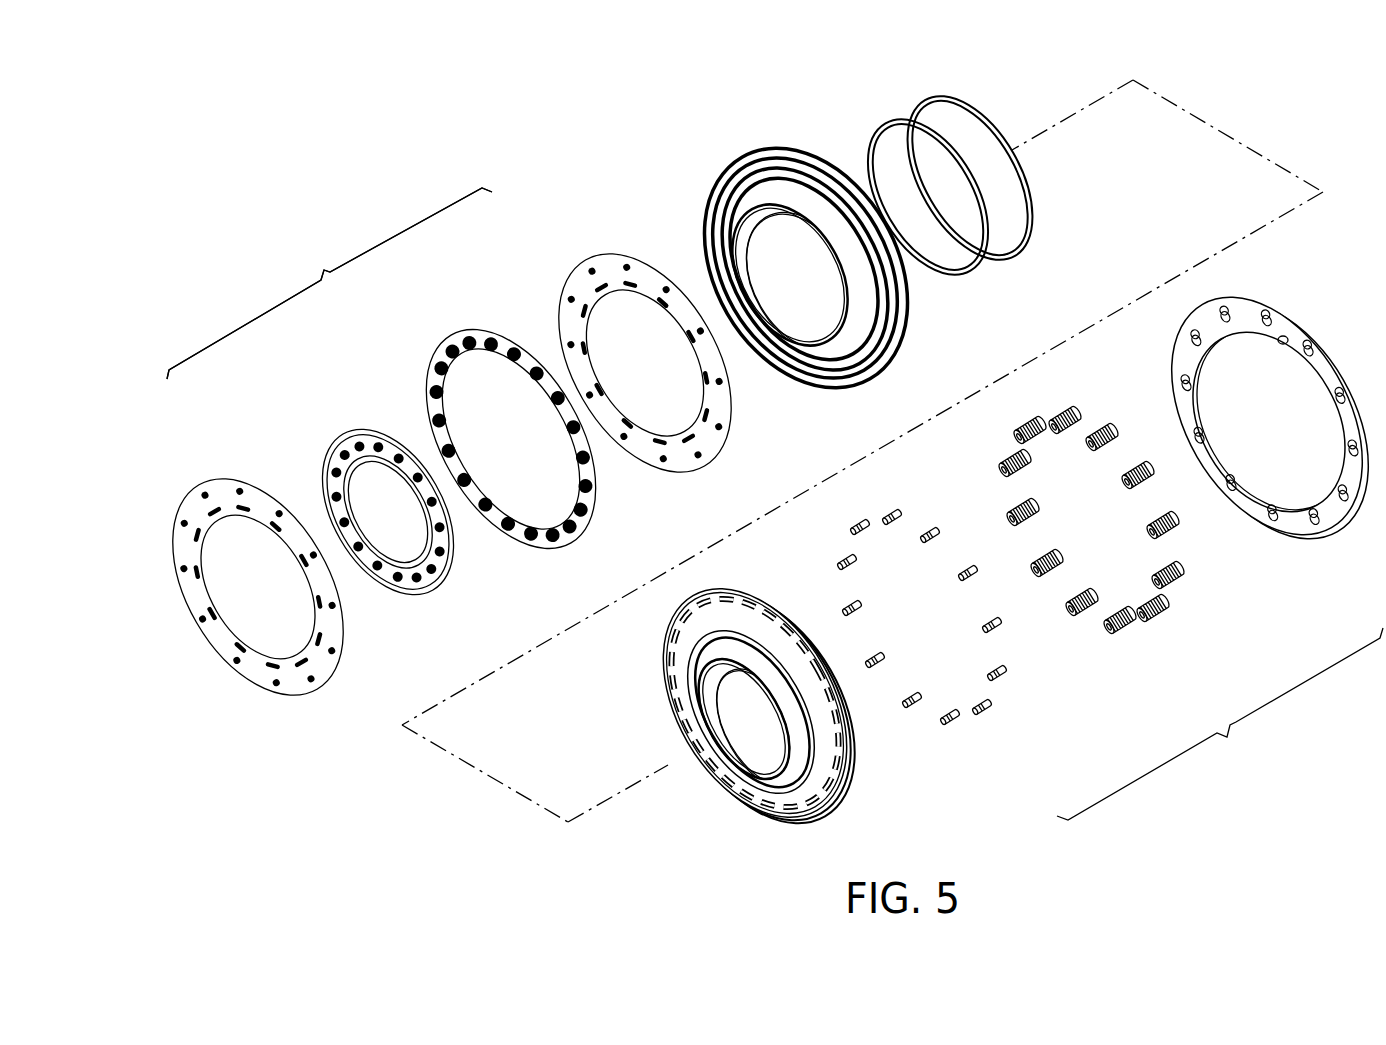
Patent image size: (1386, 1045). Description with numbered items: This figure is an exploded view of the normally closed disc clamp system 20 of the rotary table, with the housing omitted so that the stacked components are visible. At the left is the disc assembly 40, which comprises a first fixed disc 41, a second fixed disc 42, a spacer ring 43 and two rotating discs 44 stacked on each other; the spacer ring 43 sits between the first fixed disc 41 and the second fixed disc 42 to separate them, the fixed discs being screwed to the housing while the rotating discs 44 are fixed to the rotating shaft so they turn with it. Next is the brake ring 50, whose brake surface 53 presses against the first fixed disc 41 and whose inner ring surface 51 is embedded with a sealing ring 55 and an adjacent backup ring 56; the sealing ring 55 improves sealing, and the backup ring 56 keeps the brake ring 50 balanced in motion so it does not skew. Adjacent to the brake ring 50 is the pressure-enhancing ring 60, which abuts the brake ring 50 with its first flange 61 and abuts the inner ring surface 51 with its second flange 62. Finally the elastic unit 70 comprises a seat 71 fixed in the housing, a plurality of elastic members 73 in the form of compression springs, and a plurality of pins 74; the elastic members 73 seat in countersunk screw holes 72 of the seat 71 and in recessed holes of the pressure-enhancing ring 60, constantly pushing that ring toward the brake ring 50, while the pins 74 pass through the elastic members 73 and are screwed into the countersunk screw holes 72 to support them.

The normally closed disc clamp system 20 is at (412, 137).
The disc assembly 40 is at (329, 283).
The first fixed disc 41 is at (572, 261).
The second fixed disc 42 is at (203, 472).
The spacer ring 43 is at (449, 336).
The rotating discs 44 is at (329, 419).
The brake ring 50 is at (734, 152).
The inner ring surface 51 is at (801, 337).
The brake surface 53 is at (742, 208).
The sealing ring 55 is at (922, 98).
The backup ring 56 is at (882, 125).
The pressure-enhancing ring 60 is at (864, 771).
The first flange 61 is at (792, 787).
The second flange 62 is at (743, 778).
The elastic unit 70 is at (1220, 724).
The seat 71 is at (1339, 541).
The countersunk screw holes 72 is at (1287, 336).
The elastic members 73 is at (1165, 625).
The pins 74 is at (1014, 699).